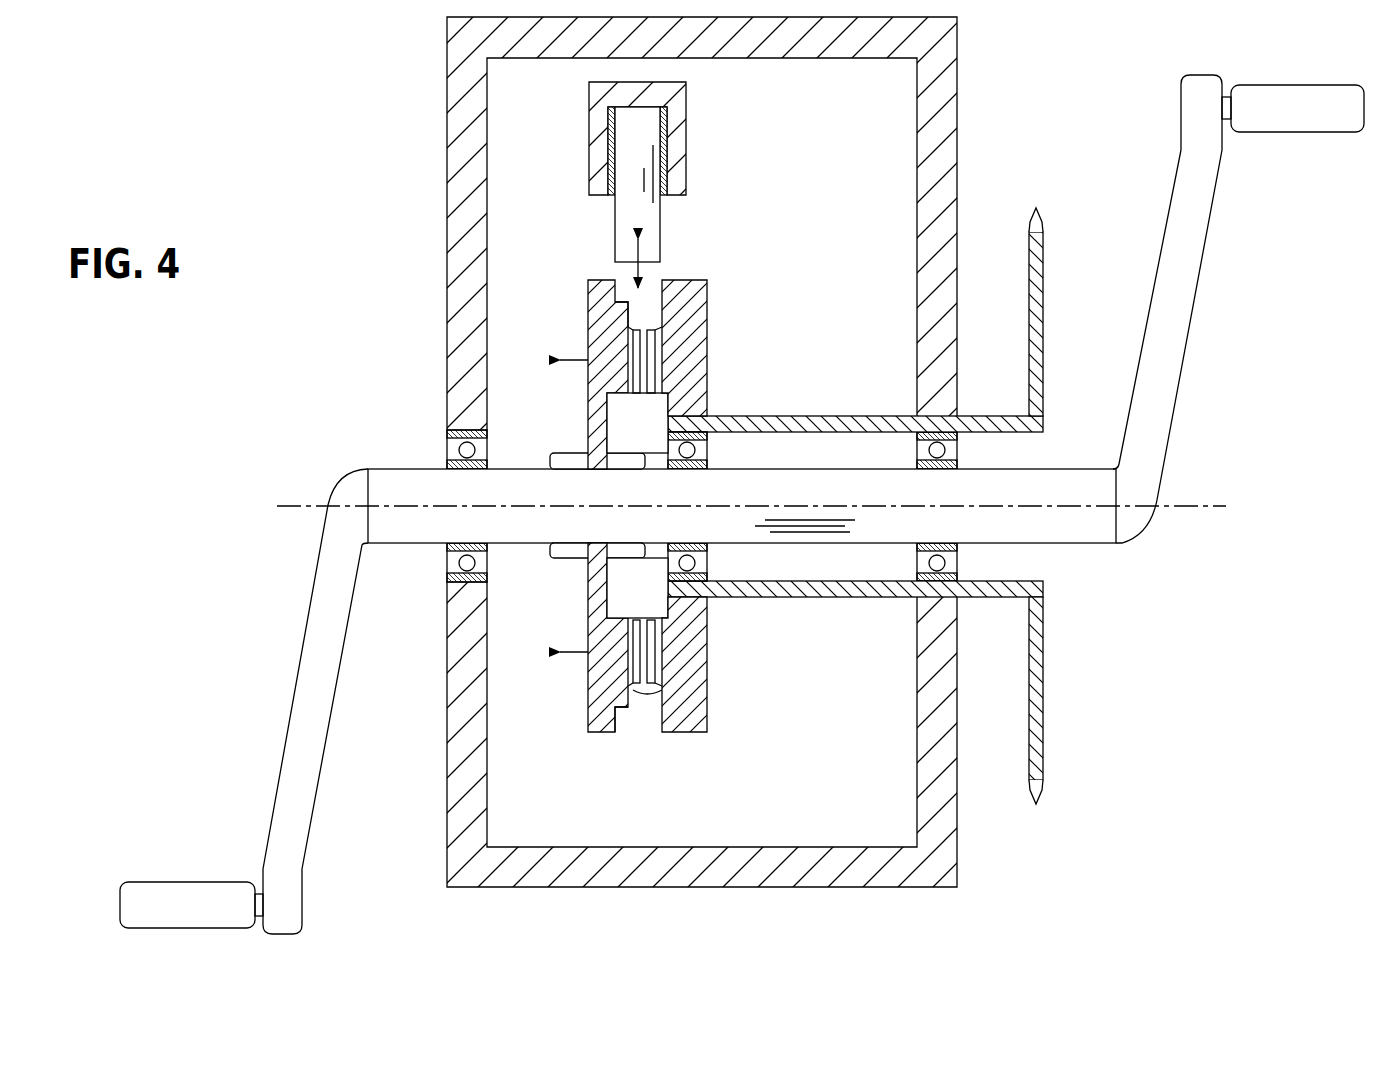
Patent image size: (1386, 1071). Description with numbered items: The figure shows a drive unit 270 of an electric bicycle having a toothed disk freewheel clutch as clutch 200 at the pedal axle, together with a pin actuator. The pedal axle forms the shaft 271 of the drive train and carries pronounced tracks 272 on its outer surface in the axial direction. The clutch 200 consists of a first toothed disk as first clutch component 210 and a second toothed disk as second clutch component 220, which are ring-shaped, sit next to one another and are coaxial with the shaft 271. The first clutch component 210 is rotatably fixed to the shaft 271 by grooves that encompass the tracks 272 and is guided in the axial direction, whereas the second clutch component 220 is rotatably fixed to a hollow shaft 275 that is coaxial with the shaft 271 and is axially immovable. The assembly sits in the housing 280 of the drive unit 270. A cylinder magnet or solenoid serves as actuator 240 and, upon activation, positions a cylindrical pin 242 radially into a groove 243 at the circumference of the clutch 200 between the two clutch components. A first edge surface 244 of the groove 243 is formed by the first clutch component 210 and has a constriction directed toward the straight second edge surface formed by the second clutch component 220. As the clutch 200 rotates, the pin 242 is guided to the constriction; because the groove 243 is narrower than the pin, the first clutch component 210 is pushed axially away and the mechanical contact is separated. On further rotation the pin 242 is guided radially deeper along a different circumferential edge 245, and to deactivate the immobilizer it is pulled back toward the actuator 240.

The clutch 200 is at (556, 344).
The first clutch component 210 is at (605, 318).
The second clutch component 220 is at (680, 353).
The actuator 240 is at (665, 94).
The cylindrical pin 242 is at (640, 215).
The groove 243 is at (650, 292).
The first edge surface 244 is at (625, 295).
The circumferential edge 245 is at (580, 688).
The drive unit 270 is at (332, 91).
The shaft 271 is at (402, 488).
The tracks 272 is at (573, 460).
The hollow shaft 275 is at (847, 594).
The housing 280 is at (467, 178).